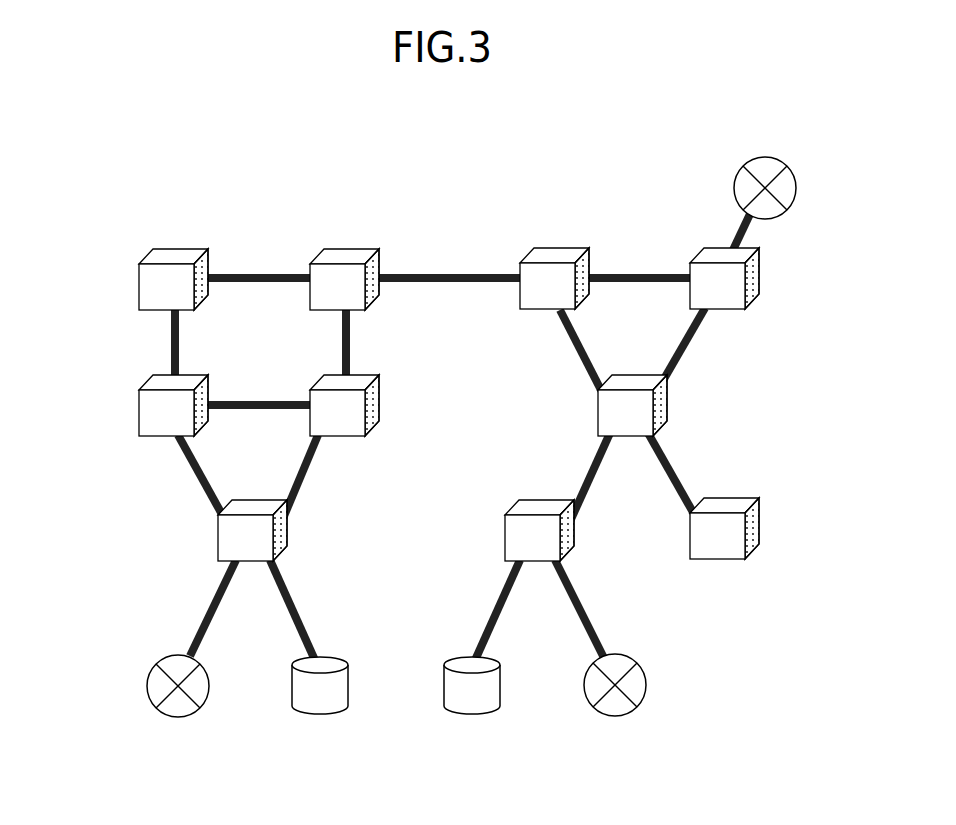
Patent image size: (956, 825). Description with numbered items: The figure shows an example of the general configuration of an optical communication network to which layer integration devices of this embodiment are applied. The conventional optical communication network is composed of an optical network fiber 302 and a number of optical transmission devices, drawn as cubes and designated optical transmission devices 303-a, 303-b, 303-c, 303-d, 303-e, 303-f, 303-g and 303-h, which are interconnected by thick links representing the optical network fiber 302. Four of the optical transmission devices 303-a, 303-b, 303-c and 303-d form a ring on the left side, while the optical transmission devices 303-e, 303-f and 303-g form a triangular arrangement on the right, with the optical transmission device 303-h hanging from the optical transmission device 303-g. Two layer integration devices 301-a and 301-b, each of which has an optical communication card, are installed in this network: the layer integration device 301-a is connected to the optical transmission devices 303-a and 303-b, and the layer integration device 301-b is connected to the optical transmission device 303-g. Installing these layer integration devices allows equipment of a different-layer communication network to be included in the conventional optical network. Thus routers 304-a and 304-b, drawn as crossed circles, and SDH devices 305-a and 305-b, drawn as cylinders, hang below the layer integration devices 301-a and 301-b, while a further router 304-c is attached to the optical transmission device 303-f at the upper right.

The optical network fiber 302 is at (432, 276).
The optical transmission device 303-a is at (138, 409).
The optical transmission device 303-b is at (381, 392).
The optical transmission device 303-c is at (182, 249).
The optical transmission device 303-d is at (352, 249).
The optical transmission device 303-e is at (562, 249).
The optical transmission device 303-f is at (762, 270).
The optical transmission device 303-g is at (668, 412).
The optical transmission device 303-h is at (762, 520).
The layer integration device 301-a is at (217, 536).
The layer integration device 301-b is at (503, 536).
The router 304-a is at (178, 718).
The router 304-b is at (615, 717).
The router 304-c is at (785, 138).
The SDH device 305-a is at (320, 716).
The SDH device 305-b is at (472, 717).